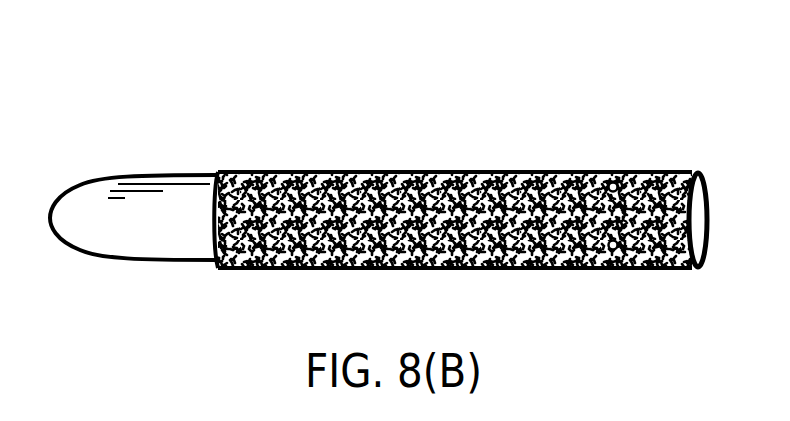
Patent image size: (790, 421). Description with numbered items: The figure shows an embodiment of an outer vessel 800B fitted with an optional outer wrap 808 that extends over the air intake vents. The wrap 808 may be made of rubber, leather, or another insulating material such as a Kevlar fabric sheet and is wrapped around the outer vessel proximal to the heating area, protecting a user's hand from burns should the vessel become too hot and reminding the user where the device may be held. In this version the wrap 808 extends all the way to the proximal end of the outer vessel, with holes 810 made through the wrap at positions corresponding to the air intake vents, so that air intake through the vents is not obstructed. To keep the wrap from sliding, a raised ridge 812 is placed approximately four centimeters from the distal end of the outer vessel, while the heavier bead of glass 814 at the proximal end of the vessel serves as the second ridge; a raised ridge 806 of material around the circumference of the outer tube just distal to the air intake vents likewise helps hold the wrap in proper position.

The second raised ridge 806 is at (380, 134).
The wrap 808 is at (388, 167).
The holes through the wrap 810 is at (612, 170).
The raised ridge 812 is at (222, 165).
The heavier bead of glass at the proximal end of the vessel 814 is at (698, 170).
The outer vessel with outer wrap 800B is at (529, 297).